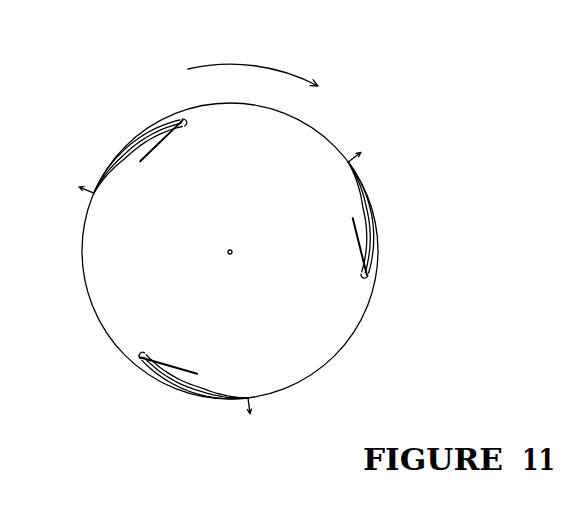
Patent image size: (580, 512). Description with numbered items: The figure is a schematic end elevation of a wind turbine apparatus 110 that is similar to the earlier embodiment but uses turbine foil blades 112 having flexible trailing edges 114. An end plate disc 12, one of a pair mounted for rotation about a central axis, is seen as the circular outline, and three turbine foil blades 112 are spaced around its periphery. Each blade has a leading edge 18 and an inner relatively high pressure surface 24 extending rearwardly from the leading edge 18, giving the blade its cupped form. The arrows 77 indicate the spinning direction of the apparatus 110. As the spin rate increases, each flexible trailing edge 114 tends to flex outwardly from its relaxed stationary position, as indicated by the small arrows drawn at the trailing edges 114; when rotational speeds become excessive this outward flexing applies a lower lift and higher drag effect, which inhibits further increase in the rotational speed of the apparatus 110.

The end plate disc 12 is at (94, 312).
The leading edge 18 is at (138, 360).
The inner relatively high pressure surface 24 is at (178, 133).
The direction of rotation 77 is at (276, 68).
The apparatus 110 is at (246, 214).
The turbine foil blade 112 is at (152, 122).
The flexible trailing edge 114 is at (104, 192).